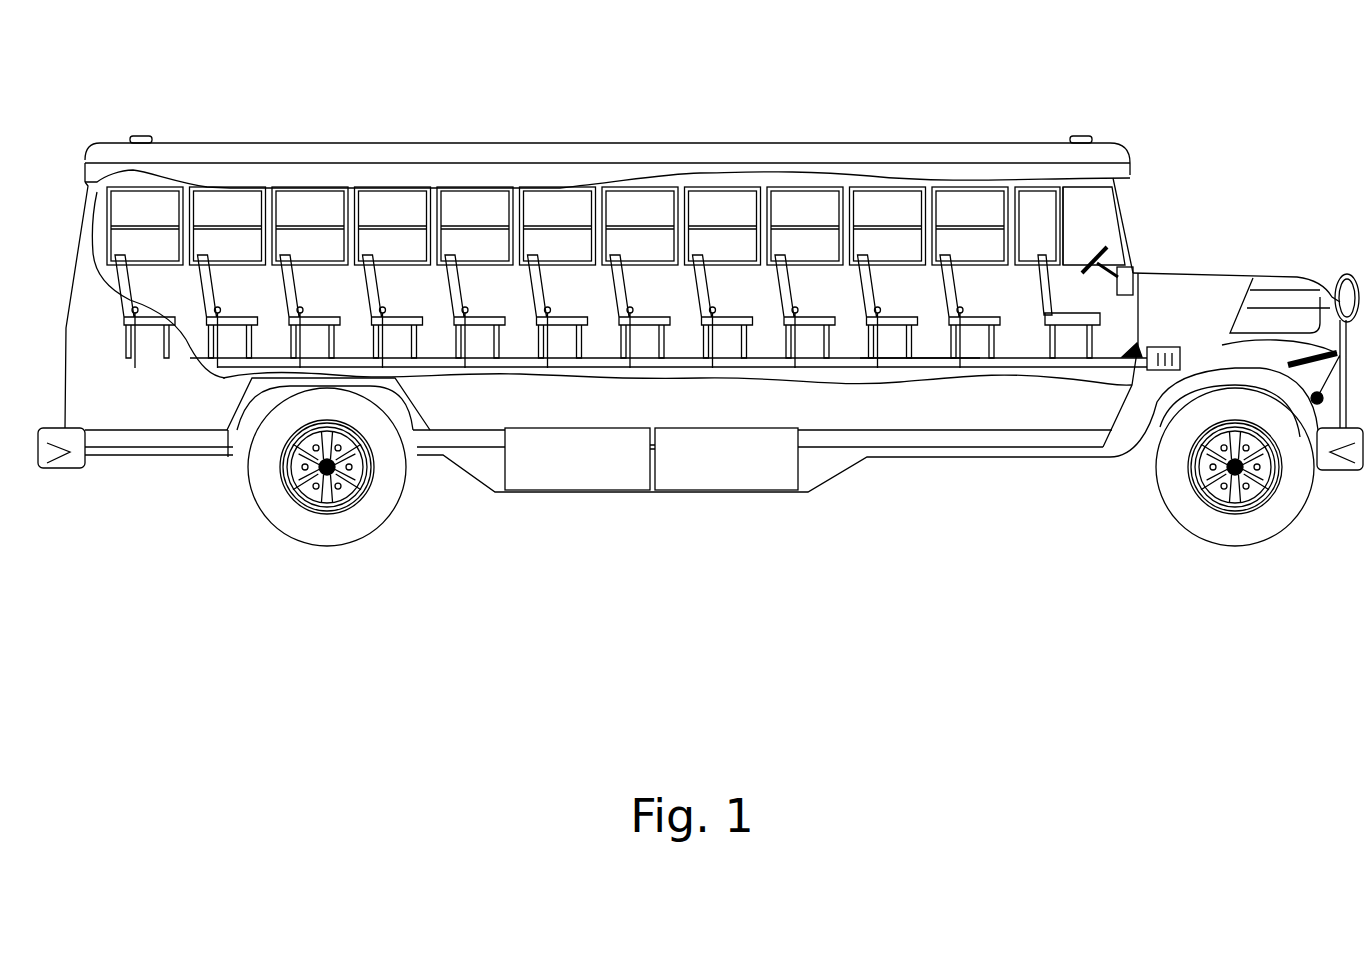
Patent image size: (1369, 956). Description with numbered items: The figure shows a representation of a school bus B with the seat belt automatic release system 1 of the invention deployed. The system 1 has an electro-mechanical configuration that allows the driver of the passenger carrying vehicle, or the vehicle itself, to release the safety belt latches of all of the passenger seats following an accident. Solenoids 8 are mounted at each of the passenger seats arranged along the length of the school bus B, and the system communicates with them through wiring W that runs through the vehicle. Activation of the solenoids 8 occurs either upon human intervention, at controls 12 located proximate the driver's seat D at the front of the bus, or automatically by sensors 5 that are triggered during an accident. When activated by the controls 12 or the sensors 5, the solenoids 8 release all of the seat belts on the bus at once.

The system 1 is at (220, 372).
The school bus B is at (597, 143).
The solenoids 8 is at (218, 307).
The driver's seat D is at (1048, 257).
The controls 12 is at (1128, 268).
The sensors 5 is at (1152, 347).
The wiring W is at (917, 360).